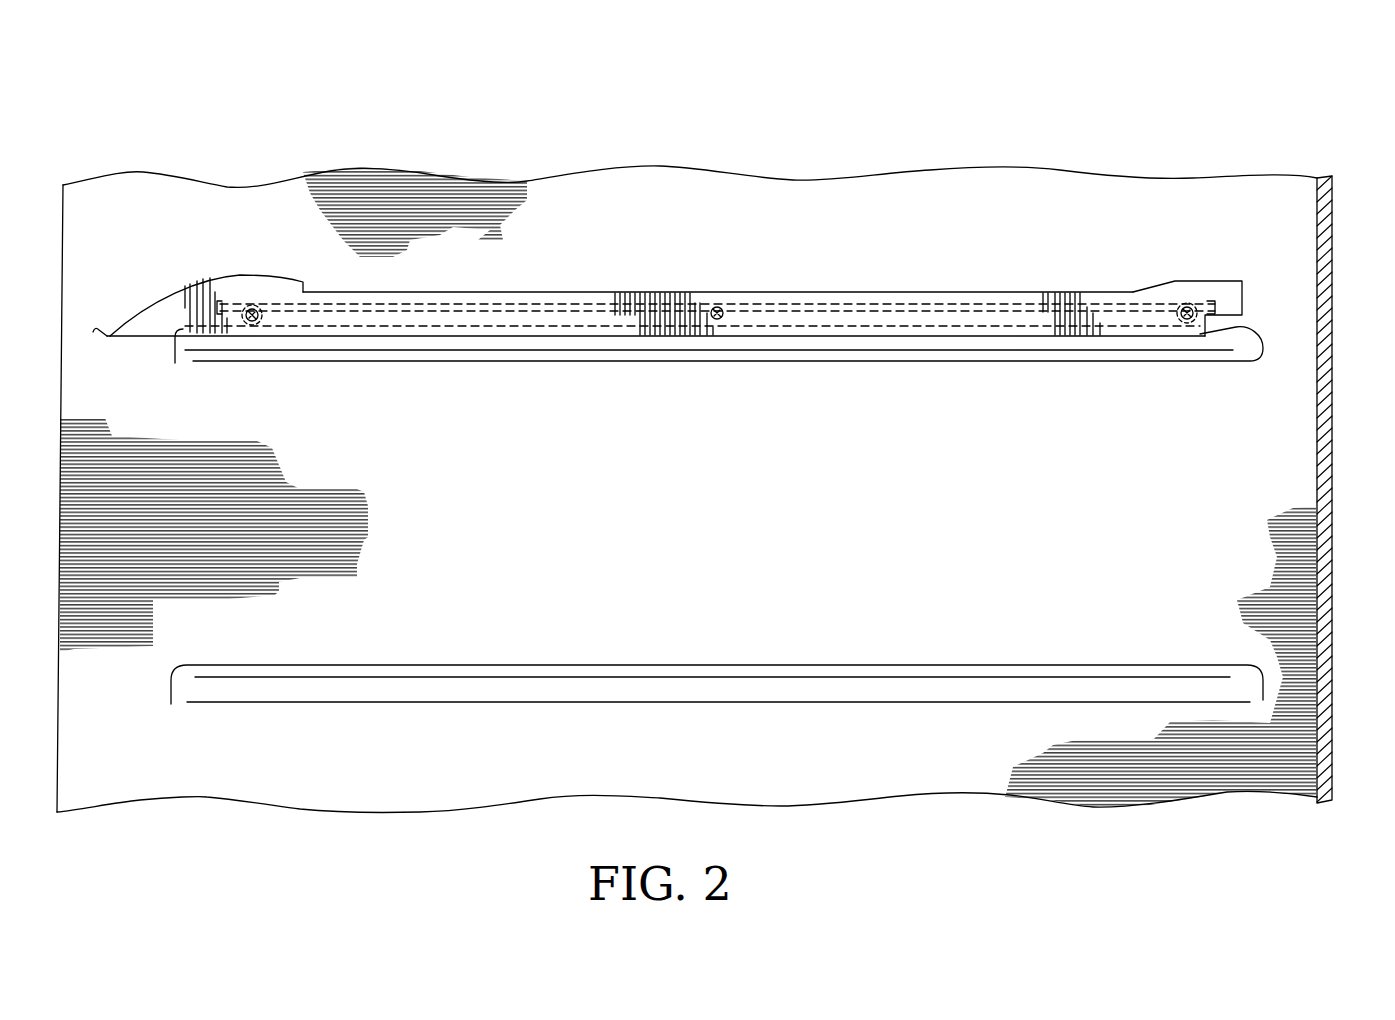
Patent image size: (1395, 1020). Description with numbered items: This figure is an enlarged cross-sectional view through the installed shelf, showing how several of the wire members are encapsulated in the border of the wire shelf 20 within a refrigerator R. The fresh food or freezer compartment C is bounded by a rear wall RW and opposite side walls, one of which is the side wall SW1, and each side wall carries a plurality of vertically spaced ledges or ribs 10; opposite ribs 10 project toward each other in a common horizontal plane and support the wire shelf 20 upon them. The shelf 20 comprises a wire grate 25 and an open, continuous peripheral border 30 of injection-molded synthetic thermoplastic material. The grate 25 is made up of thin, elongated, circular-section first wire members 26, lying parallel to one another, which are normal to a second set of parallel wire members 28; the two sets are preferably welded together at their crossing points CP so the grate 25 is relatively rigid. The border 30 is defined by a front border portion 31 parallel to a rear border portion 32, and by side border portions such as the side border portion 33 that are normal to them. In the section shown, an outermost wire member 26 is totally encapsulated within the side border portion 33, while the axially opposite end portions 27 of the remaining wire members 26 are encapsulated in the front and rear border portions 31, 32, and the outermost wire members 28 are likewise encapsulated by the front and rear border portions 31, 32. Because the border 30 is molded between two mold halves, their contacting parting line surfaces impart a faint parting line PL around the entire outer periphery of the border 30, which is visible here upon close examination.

The ledges or ribs 10 is at (883, 358).
The wire shelf 20 is at (980, 267).
The wire grate 25 is at (527, 297).
The first wire members 26 is at (577, 300).
The end portions of first wire members 27 is at (230, 302).
The second wire members 28 is at (249, 323).
The peripheral border 30 is at (915, 290).
The front border portion 31 is at (148, 313).
The rear border portion 32 is at (1173, 288).
The side border portion 33 is at (837, 315).
The parting line PL is at (100, 332).
The crossing points CP is at (262, 314).
The side wall SW1 is at (688, 512).
The refrigerator R is at (1312, 150).
The compartment C is at (1263, 410).
The rear wall RW is at (1313, 445).